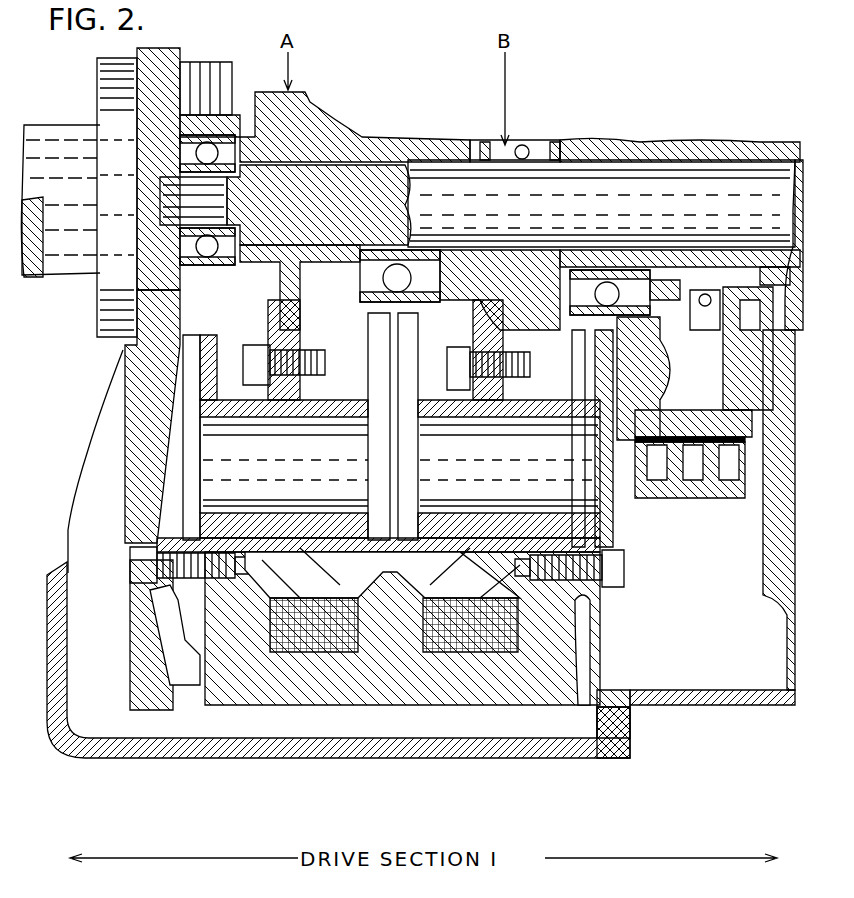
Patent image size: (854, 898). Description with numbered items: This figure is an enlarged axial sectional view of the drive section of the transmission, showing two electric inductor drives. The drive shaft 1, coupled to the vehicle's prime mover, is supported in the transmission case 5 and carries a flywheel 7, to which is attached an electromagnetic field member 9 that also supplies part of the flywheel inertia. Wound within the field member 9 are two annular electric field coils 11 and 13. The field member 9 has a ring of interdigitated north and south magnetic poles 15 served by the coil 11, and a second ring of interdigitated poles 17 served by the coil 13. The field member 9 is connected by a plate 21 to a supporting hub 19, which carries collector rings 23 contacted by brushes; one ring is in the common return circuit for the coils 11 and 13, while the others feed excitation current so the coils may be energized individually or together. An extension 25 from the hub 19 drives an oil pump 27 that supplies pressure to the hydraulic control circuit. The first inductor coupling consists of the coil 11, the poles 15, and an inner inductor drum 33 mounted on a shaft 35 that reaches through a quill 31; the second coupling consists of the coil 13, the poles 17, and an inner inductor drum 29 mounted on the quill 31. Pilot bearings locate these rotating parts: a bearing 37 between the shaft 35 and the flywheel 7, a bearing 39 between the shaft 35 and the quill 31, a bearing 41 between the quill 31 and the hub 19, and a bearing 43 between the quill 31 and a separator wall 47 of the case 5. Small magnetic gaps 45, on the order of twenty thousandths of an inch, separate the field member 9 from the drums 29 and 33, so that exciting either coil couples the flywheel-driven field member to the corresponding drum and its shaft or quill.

The drive shaft 1 is at (72, 272).
The transmission case 5 is at (632, 735).
The flywheel 7 is at (140, 416).
The electromagnetic field member 9 is at (200, 546).
The electric field coil 11 is at (314, 625).
The electric field coil 13 is at (470, 625).
The magnetic poles 15 is at (362, 563).
The magnetic poles 17 is at (460, 563).
The supporting hub 19 is at (658, 425).
The plate 21 is at (612, 514).
The collector rings 23 is at (712, 488).
The extension 25 is at (685, 308).
The oil pump 27 is at (735, 345).
The inner inductor drum 29 is at (500, 476).
The quill 31 is at (510, 265).
The inner inductor drum 33 is at (298, 476).
The shaft 35 is at (492, 206).
The pilot bearing 37 is at (215, 137).
The pilot bearing 39 is at (384, 278).
The pilot bearing 41 is at (575, 283).
The pilot bearing 43 is at (790, 265).
The magnetic gaps 45 is at (410, 538).
The separator wall 47 is at (767, 562).